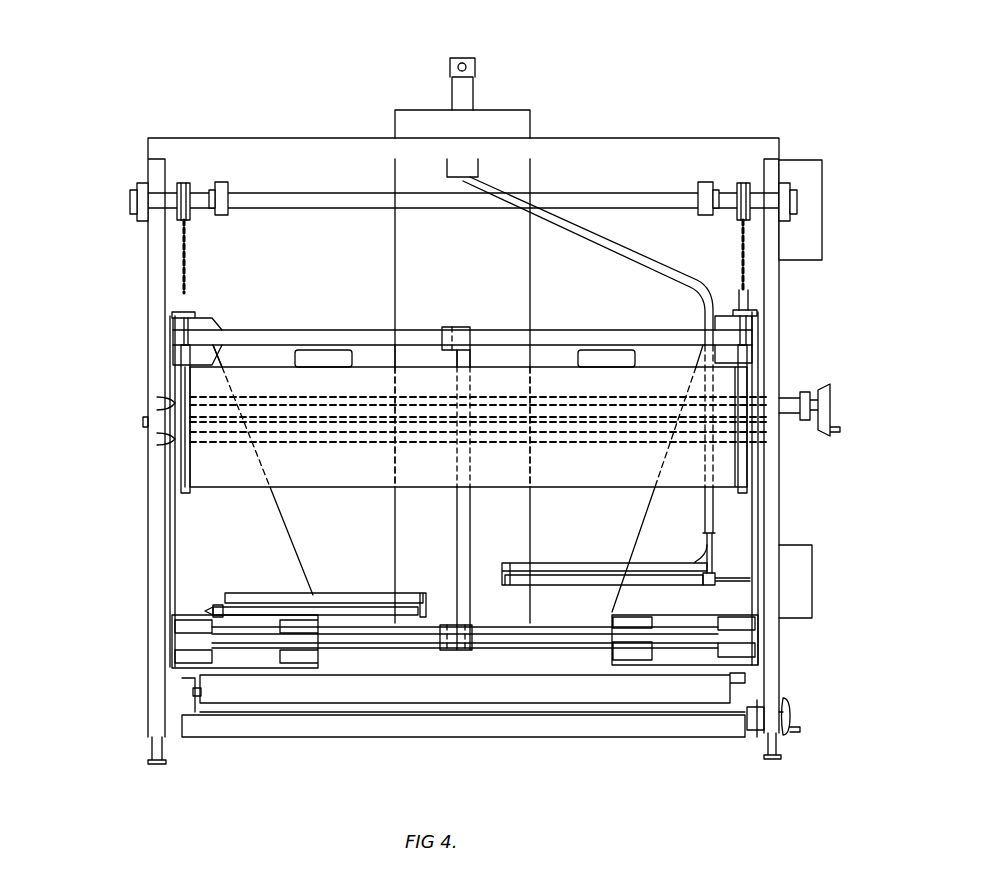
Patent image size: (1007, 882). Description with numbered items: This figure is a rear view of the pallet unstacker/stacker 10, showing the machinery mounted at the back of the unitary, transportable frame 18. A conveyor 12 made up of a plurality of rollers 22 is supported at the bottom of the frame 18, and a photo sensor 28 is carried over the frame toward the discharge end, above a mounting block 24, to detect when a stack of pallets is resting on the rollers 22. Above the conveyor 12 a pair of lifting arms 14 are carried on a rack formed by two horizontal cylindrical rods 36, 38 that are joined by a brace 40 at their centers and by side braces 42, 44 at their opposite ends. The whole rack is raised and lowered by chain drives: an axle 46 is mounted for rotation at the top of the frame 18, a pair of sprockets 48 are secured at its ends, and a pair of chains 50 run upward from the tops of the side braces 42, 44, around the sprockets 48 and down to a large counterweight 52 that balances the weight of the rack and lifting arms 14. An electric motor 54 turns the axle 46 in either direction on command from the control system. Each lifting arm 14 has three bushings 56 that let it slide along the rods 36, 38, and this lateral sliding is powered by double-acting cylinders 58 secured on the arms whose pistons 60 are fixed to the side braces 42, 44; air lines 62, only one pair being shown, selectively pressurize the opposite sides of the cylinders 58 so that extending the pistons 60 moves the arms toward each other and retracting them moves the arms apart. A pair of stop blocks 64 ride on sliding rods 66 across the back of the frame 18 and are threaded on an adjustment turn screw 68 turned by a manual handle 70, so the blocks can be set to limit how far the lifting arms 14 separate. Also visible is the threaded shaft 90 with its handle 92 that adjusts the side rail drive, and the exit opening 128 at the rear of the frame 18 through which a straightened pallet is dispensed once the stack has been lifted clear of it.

The pallet unstacker/stacker 10 is at (698, 92).
The conveyor 12 is at (535, 662).
The lifting arms 14 is at (210, 540).
The frame 18 is at (347, 148).
The rollers 22 is at (680, 690).
The motor housing 24 is at (500, 118).
The photo sensor 28 is at (465, 58).
The horizontal cylindrical rod 36 is at (200, 280).
The horizontal cylindrical rod 38 is at (195, 690).
The brace 40 is at (470, 600).
The side brace 42 is at (758, 352).
The side brace 44 is at (172, 488).
The axle 46 is at (270, 200).
The sprockets 48 is at (184, 183).
The chains 50 is at (183, 250).
The counterweight 52 is at (215, 463).
The electric motor 54 is at (812, 218).
The bushings 56 is at (173, 320).
The double-acting cylinders 58 is at (330, 605).
The pistons 60 is at (210, 610).
The air lines 62 is at (612, 240).
The stop blocks 64 is at (150, 385).
The sliding rods 66 is at (280, 390).
The adjustment turn screw 68 is at (330, 375).
The manual handle 70 is at (832, 412).
The threaded shaft 90 is at (760, 710).
The handle 92 is at (793, 713).
The exit opening 128 is at (390, 662).